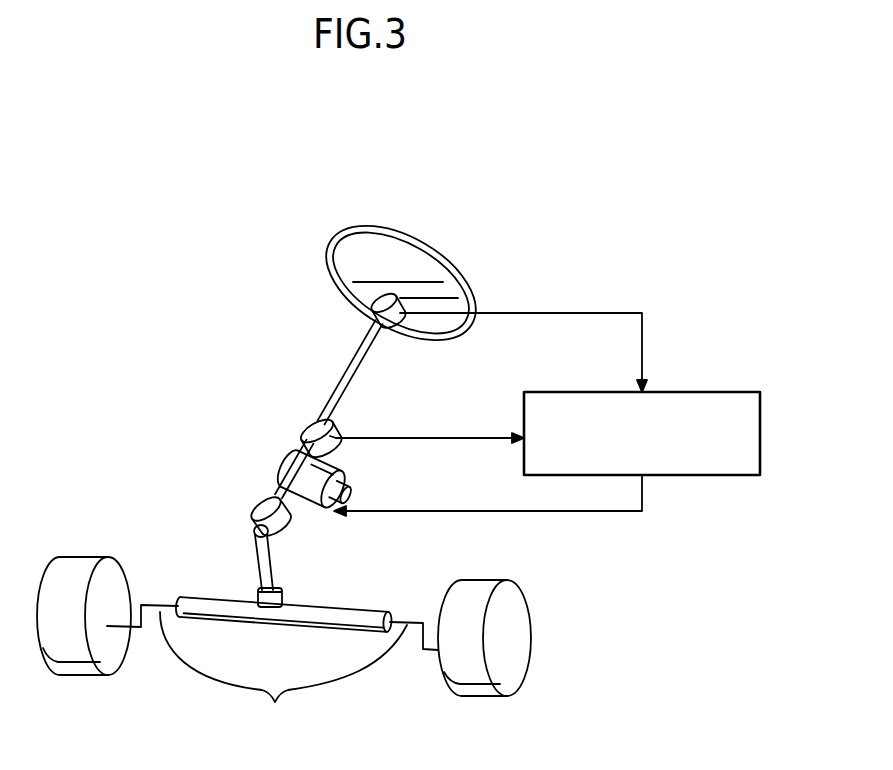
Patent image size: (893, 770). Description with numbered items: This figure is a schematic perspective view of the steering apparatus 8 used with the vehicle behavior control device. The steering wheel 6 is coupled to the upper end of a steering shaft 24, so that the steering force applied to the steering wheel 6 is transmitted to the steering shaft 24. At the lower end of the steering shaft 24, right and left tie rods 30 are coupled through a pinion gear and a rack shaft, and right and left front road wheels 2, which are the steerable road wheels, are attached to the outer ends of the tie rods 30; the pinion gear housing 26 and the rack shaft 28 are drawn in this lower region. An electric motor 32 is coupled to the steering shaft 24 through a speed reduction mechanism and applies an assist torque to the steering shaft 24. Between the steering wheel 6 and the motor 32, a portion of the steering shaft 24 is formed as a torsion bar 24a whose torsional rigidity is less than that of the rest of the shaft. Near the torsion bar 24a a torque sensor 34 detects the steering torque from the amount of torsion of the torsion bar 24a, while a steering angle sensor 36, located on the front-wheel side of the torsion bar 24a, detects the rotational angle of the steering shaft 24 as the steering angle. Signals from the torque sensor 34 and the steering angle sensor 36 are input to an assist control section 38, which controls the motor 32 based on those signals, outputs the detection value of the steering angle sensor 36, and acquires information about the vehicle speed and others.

The steering apparatus 8 is at (608, 154).
The steering wheel 6 is at (433, 258).
The steering shaft 24 is at (348, 378).
The torsion bar 24a is at (335, 429).
The torque sensor 34 is at (302, 426).
The electric motor 32 is at (298, 504).
The steering angle sensor 36 is at (256, 503).
The pinion gear housing 26 is at (262, 594).
The rack shaft 28 is at (366, 616).
The tie rods 30 is at (283, 673).
The front road wheels 2 is at (68, 666).
The assist control section 38 is at (703, 391).